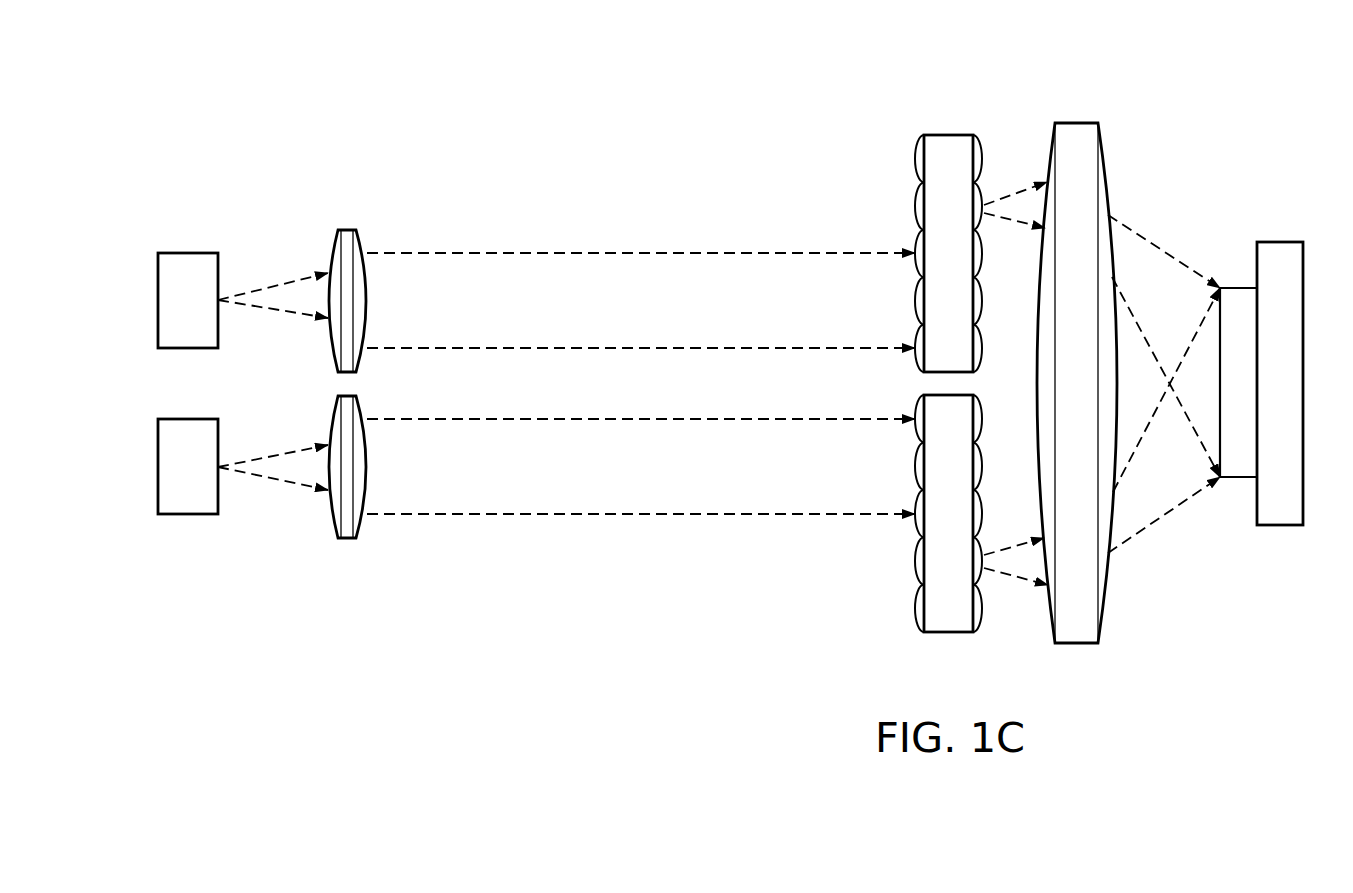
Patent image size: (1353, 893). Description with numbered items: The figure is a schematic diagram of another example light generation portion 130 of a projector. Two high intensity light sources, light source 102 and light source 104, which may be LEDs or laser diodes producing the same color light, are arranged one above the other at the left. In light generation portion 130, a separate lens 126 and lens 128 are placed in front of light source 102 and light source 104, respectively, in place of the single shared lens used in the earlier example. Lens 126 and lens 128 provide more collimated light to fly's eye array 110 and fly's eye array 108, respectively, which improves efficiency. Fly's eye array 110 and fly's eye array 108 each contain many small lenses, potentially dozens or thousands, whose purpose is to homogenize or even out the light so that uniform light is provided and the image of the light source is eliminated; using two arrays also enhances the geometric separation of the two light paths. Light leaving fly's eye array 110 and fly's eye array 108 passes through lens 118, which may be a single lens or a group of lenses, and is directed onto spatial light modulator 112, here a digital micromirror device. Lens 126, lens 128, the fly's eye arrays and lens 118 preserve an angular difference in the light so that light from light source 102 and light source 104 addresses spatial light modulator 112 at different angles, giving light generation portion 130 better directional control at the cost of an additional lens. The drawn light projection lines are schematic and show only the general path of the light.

The light generation portion 130 is at (401, 97).
The light source 102 is at (186, 253).
The light source 104 is at (188, 514).
The lens 126 is at (344, 230).
The lens 128 is at (345, 538).
The fly's eye array 110 is at (950, 135).
The fly's eye array 108 is at (950, 632).
The lens 118 is at (1078, 123).
The spatial light modulator 112 is at (1280, 242).